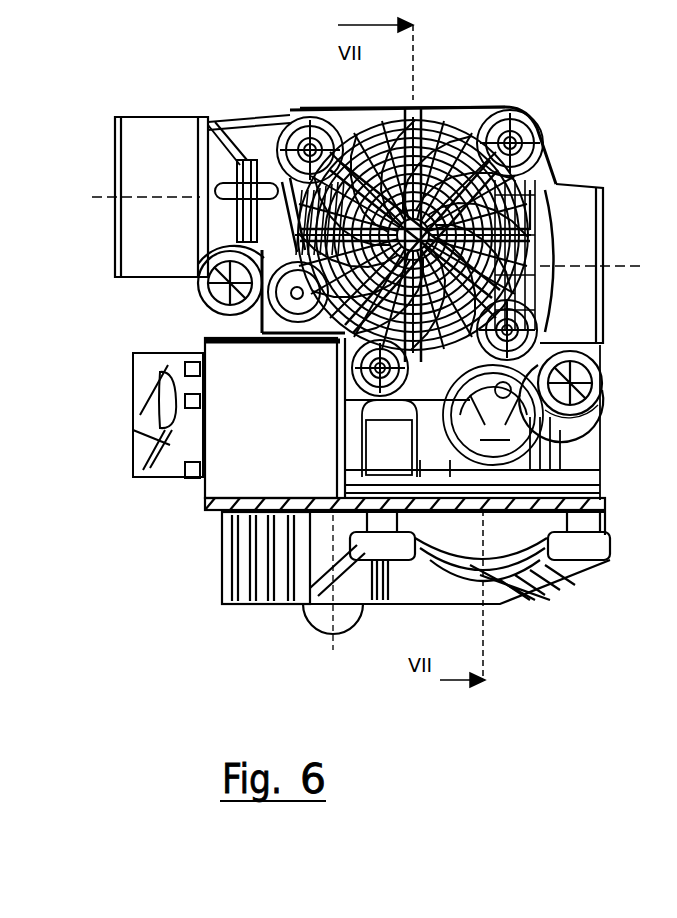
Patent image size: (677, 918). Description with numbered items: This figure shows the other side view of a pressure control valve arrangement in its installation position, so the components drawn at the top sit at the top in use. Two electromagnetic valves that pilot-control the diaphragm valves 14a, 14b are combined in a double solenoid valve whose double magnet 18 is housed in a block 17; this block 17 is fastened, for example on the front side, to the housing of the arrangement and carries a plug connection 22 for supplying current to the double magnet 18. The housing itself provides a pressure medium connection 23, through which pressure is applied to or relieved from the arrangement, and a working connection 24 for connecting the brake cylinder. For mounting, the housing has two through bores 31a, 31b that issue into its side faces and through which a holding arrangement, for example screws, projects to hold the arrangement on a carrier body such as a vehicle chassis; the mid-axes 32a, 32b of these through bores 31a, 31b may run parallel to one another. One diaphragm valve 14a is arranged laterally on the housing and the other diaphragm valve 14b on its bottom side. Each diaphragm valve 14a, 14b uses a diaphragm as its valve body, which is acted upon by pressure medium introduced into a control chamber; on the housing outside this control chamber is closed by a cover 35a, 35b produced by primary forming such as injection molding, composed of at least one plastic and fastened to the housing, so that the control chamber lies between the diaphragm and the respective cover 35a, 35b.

The diaphragm valve 14a is at (572, 164).
The diaphragm valve 14b is at (295, 648).
The block 17 is at (210, 500).
The double magnet 18 is at (205, 346).
The plug connection 22 is at (138, 430).
The pressure medium connection 23 is at (100, 179).
The working connection 24 is at (618, 238).
The through bore 31a is at (198, 289).
The through bore 31b is at (578, 380).
The mid-axis 32a is at (212, 250).
The mid-axis 32b is at (595, 398).
The cover 35a is at (355, 108).
The cover 35b is at (545, 588).